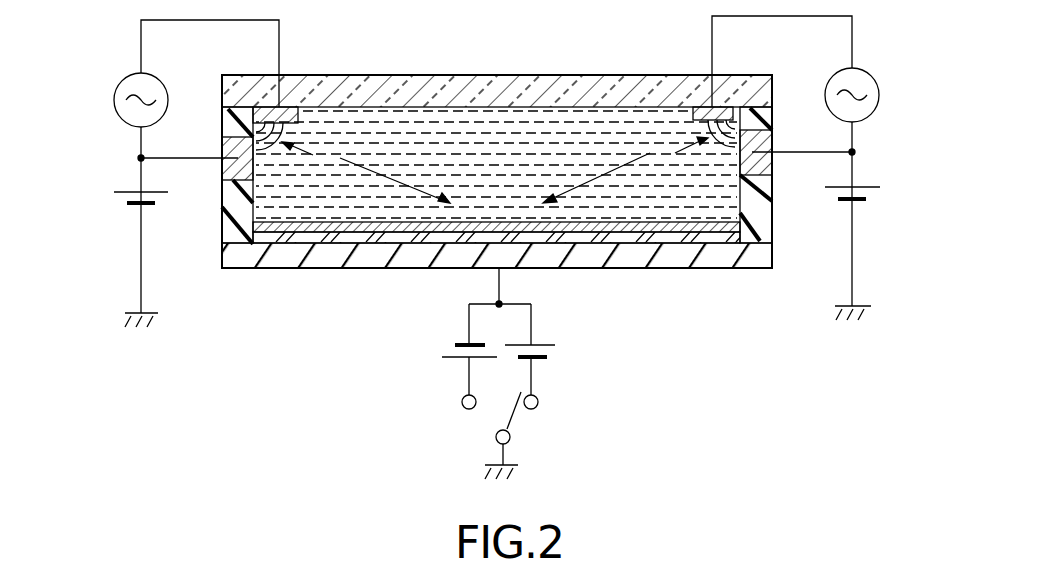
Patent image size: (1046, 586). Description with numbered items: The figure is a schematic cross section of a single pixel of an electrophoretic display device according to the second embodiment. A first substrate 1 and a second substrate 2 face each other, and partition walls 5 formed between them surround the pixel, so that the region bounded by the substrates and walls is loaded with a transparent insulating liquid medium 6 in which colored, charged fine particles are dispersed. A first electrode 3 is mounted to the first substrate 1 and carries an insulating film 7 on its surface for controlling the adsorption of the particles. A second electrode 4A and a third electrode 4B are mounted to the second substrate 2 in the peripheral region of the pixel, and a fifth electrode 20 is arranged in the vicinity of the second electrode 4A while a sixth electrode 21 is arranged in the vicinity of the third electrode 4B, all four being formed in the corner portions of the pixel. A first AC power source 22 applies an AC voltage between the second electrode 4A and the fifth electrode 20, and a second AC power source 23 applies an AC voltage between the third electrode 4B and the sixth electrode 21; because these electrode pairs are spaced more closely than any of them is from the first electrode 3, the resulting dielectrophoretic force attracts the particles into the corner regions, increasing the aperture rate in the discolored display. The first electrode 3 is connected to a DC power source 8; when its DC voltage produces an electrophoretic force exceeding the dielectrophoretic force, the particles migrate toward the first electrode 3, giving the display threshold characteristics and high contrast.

The first substrate 1 is at (270, 268).
The second substrate 2 is at (382, 83).
The first electrode 3 is at (400, 238).
The second electrode 4A is at (291, 110).
The third electrode 4B is at (703, 105).
The partition walls 5 is at (230, 237).
The insulating liquid medium 6 is at (483, 127).
The insulating film 7 is at (342, 235).
The DC power source 8 is at (557, 347).
The fifth electrode 20 is at (223, 147).
The sixth electrode 21 is at (763, 163).
The first AC power source 22 is at (161, 77).
The second AC power source 23 is at (835, 72).